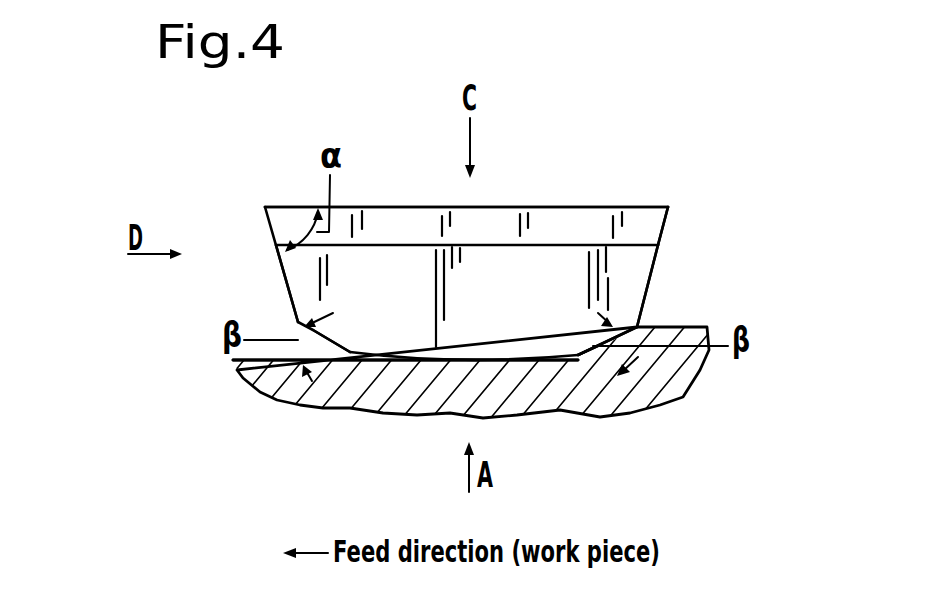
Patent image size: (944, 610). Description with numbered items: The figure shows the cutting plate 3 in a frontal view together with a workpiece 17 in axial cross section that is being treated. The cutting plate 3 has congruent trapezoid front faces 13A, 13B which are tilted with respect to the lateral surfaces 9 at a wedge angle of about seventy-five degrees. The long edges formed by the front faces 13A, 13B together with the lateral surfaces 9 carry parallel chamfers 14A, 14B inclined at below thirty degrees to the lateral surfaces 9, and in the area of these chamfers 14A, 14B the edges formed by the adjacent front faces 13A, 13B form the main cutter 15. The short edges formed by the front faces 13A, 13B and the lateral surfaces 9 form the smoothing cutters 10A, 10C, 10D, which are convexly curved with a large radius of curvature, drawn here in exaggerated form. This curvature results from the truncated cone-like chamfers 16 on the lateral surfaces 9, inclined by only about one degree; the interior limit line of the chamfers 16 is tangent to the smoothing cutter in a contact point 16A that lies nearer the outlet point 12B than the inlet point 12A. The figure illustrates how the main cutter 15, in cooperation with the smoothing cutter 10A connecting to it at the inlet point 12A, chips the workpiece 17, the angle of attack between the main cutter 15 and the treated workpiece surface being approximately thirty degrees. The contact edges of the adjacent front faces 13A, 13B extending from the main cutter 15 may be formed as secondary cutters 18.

The cutting plate 3 is at (306, 187).
The lateral surfaces 9 is at (530, 207).
The smoothing cutter 10A is at (505, 357).
The smoothing cutter 10C is at (670, 207).
The smoothing cutter 10D is at (265, 207).
The inlet point 12A is at (579, 355).
The outlet point 12B is at (353, 350).
The front face 13A is at (277, 246).
The front face 13B is at (305, 268).
The chamfer 14A is at (333, 347).
The chamfer 14B is at (591, 230).
The main cutter 15 is at (610, 343).
The truncated cone-like chamfer 16 is at (658, 207).
The contact point 16A is at (439, 362).
The workpiece 17 is at (384, 411).
The secondary cutter 18 is at (650, 273).